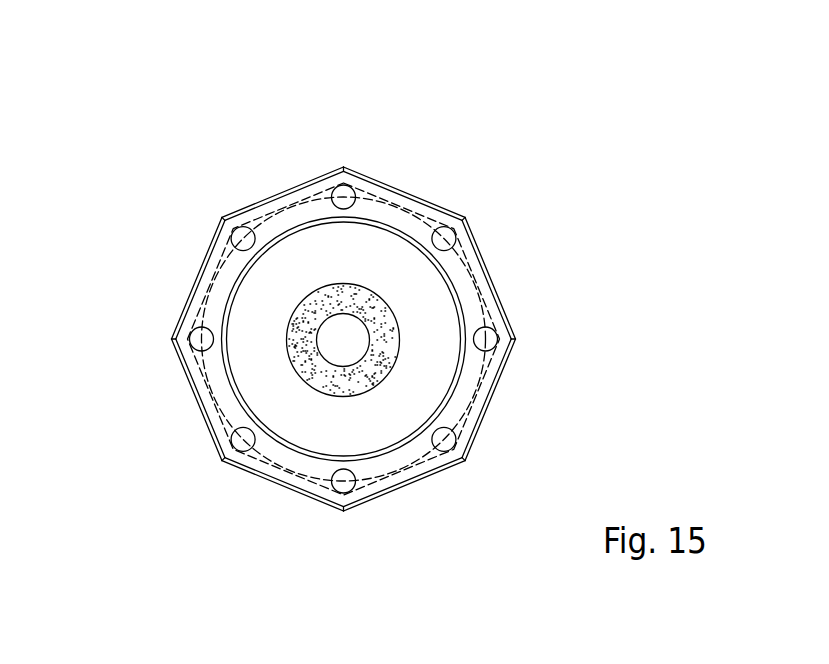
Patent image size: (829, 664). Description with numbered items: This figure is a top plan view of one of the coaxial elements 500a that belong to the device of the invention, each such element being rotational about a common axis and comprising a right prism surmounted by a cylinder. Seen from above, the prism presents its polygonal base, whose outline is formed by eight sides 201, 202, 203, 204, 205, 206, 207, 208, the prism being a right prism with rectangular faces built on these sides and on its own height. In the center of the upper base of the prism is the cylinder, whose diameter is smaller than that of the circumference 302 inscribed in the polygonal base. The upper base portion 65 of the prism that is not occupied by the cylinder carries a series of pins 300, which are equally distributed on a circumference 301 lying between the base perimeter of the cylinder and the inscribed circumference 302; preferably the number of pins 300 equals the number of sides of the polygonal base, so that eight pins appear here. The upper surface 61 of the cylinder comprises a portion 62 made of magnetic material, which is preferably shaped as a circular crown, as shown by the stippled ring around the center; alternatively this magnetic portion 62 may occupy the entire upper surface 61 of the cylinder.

The coaxial element 500a is at (517, 33).
The side of the base polygonal 201 is at (495, 390).
The side of the base polygonal 202 is at (496, 290).
The side of the base polygonal 203 is at (417, 193).
The side of the base polygonal 204 is at (290, 185).
The side of the base polygonal 205 is at (197, 277).
The side of the base polygonal 206 is at (187, 377).
The side of the base polygonal 207 is at (280, 485).
The side of the base polygonal 208 is at (398, 488).
The upper base portion 65 is at (385, 213).
The upper surface of the cylinder 61 is at (432, 368).
The magnetic portion 62 is at (327, 376).
The pin 300 is at (241, 440).
The circumference 301 is at (423, 464).
The circumference inscribed in the base polygonal 302 is at (353, 493).